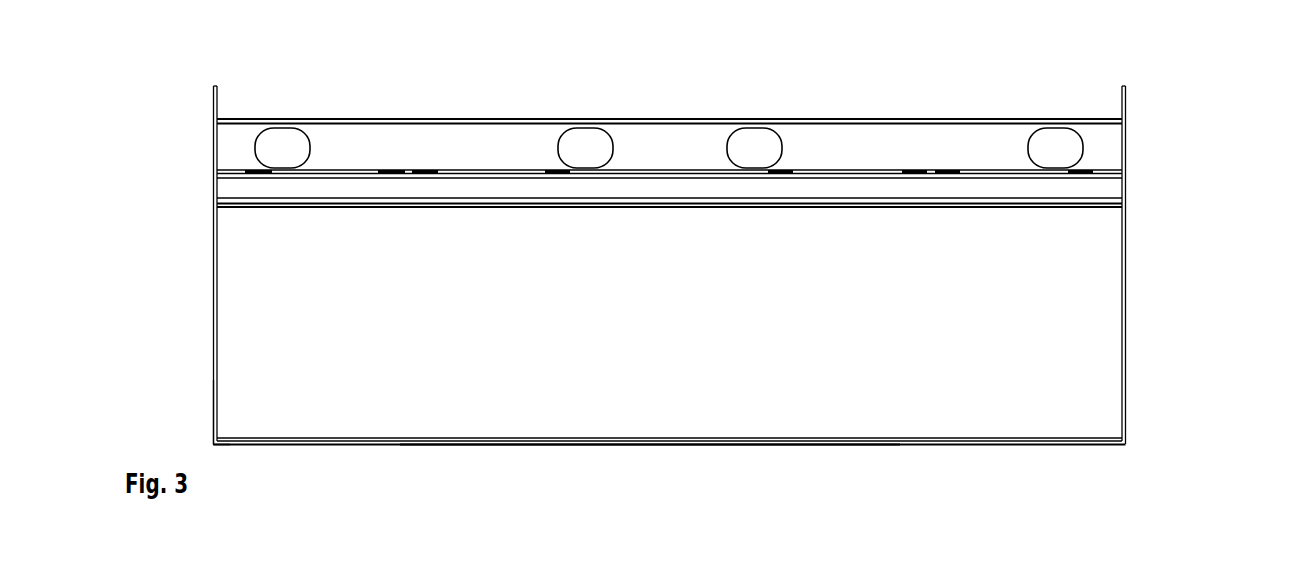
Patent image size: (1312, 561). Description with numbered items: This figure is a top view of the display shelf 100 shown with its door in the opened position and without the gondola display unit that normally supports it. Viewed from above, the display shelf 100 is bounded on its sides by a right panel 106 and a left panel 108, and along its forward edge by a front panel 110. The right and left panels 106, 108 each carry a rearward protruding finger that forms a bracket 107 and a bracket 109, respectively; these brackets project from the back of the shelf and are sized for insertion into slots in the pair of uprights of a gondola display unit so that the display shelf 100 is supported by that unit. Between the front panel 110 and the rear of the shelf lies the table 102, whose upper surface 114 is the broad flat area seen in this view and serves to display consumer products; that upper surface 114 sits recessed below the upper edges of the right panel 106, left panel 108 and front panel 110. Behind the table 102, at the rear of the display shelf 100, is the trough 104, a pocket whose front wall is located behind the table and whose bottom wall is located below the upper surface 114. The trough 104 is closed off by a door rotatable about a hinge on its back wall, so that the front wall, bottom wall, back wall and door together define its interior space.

The display shelf 100 is at (1212, 113).
The table 102 is at (208, 210).
The trough 104 is at (208, 120).
The right panel 106 is at (1126, 305).
The bracket 107 is at (1127, 108).
The left panel 108 is at (215, 382).
The bracket 109 is at (211, 112).
The front panel 110 is at (695, 447).
The upper surface 114 is at (688, 318).